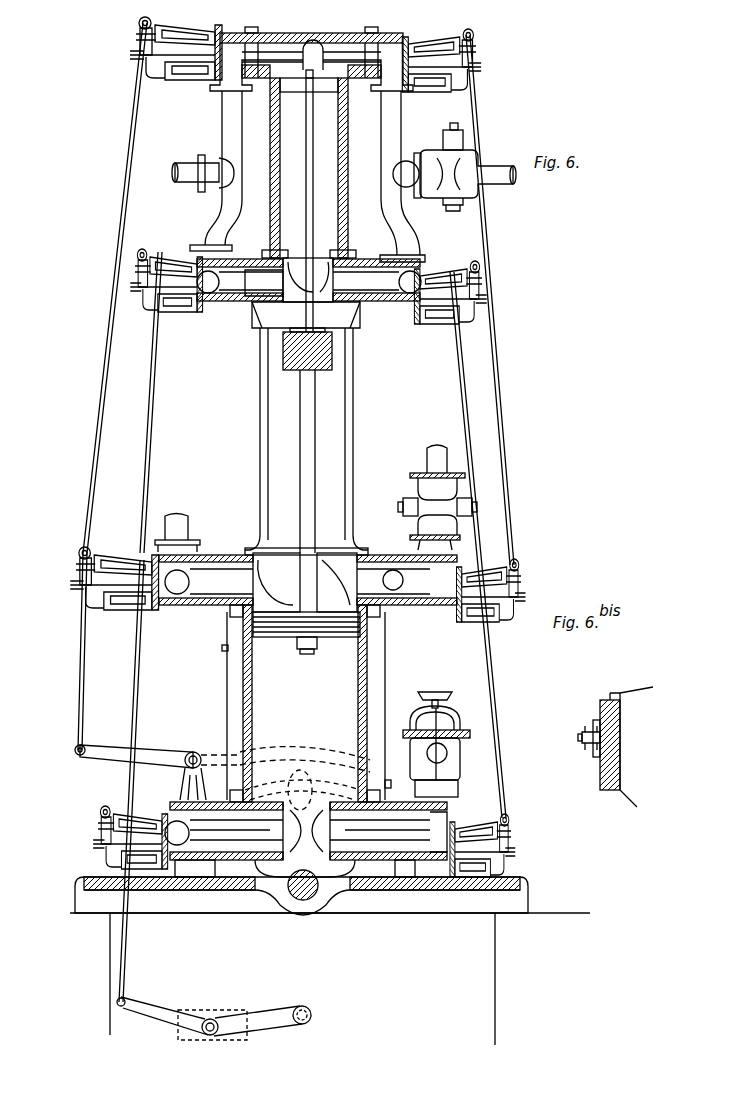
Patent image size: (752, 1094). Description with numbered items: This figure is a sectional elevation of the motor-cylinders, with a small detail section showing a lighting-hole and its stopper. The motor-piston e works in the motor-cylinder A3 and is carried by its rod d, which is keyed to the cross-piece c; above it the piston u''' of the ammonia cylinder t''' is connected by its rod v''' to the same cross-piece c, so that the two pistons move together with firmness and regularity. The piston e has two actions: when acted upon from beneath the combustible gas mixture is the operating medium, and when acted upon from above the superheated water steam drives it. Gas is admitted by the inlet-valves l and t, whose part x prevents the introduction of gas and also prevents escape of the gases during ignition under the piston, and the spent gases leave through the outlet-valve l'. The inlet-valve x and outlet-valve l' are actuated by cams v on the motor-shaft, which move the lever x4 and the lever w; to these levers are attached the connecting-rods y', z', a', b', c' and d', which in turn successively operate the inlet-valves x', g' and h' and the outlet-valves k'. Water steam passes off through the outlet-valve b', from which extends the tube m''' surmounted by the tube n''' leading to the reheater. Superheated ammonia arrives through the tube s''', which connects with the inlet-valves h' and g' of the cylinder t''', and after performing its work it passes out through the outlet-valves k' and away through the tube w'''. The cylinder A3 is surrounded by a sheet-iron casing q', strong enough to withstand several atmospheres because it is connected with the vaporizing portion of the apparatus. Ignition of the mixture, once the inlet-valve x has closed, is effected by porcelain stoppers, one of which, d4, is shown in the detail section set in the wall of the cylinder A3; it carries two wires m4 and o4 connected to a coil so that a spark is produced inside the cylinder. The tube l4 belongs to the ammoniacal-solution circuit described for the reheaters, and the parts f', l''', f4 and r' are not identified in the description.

In FIG. 6, the outlet-valve k' is at (311, 27).
In FIG. 6, the inlet-valve h' is at (334, 39).
In FIG. 6, the piston u''' is at (309, 82).
In FIG. 6, the cylinder t''' is at (309, 168).
In FIG. 6, the piston-rod v''' is at (322, 205).
In FIG. 6, the tube w''' is at (207, 171).
In FIG. 6, the tube s''' is at (459, 173).
In FIG. 6, the inlet-valve g' is at (397, 249).
In FIG. 6, the port f' is at (264, 283).
In FIG. 6, the cross-piece c is at (301, 362).
In FIG. 6, the piston-rod d is at (307, 461).
In FIG. 6, the connecting-rod a' is at (115, 288).
In FIG. 6, the connecting-rod z' is at (88, 651).
In FIG. 6, the connecting-rod b' is at (157, 402).
In FIG. 6, the connecting-rod y' is at (137, 781).
In FIG. 6, the connecting-rod c' is at (495, 300).
In FIG. 6, the connecting-rod d' is at (478, 545).
In FIG. 6, the valve l''' is at (437, 486).
In FIG. 6, the tube n''' is at (177, 533).
In FIG. 6, the tube m''' is at (181, 582).
In FIG. 6, the inlet-valve x' is at (395, 576).
In FIG. 6, the motor-piston e is at (276, 640).
In FIG. 6, the motor-cylinder A3 is at (306, 703).
In FIG. 6bis, the motor-cylinder A3 is at (626, 747).
In FIG. 6, the sheet-iron casing q' is at (297, 704).
In FIG. 6, the stud f4 is at (218, 645).
In FIG. 6, the lever x4 is at (282, 750).
In FIG. 6, the cam v is at (302, 785).
In FIG. 6, the stud r' is at (386, 775).
In FIG. 6, the inlet-valve l is at (436, 744).
In FIG. 6, the tube l4 is at (177, 833).
In FIG. 6, the outlet-valve l' is at (236, 834).
In FIG. 6, the inlet-valve x is at (380, 834).
In FIG. 6, the inlet-valve t is at (429, 833).
In FIG. 6, the lever w is at (214, 1018).
In FIG. 6bis, the stopper d4 is at (595, 718).
In FIG. 6bis, the wire m4 is at (580, 735).
In FIG. 6bis, the wire o4 is at (587, 752).